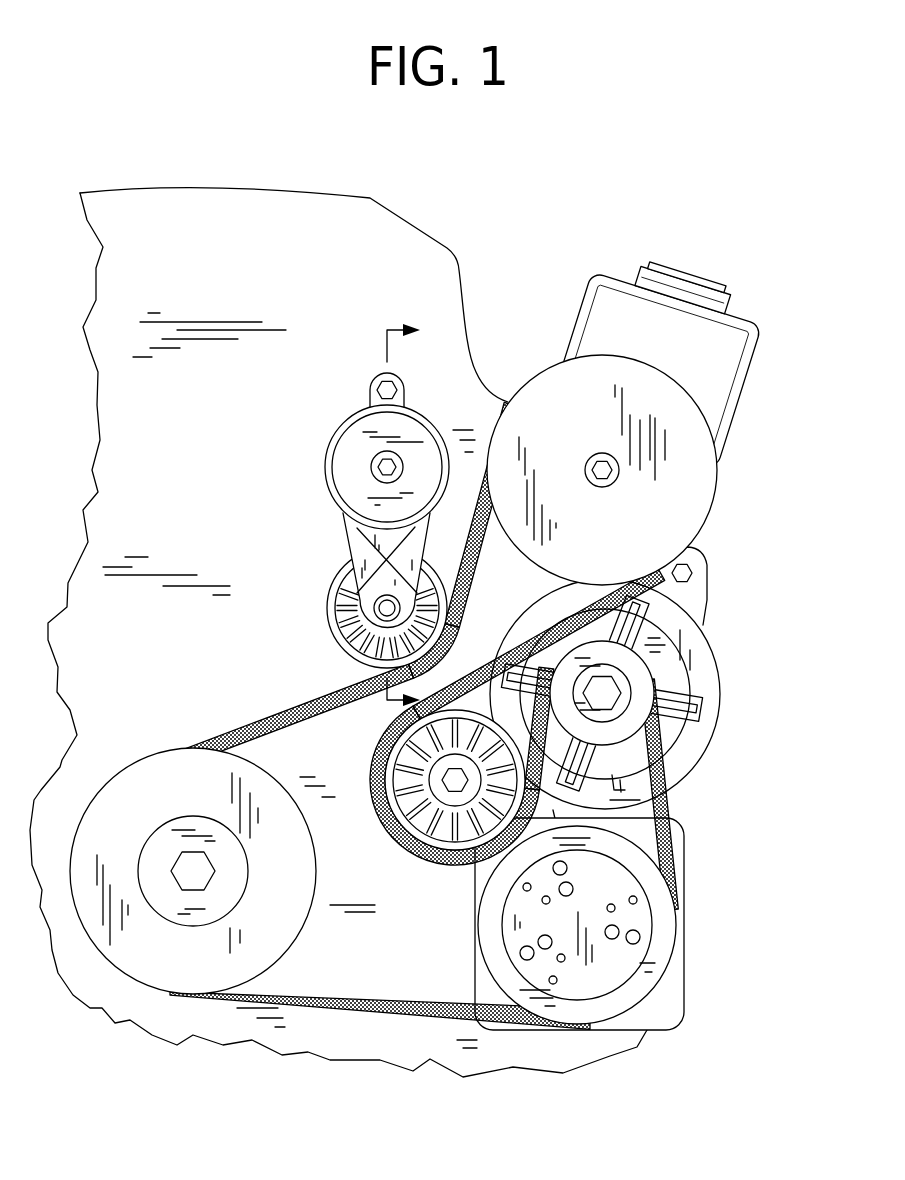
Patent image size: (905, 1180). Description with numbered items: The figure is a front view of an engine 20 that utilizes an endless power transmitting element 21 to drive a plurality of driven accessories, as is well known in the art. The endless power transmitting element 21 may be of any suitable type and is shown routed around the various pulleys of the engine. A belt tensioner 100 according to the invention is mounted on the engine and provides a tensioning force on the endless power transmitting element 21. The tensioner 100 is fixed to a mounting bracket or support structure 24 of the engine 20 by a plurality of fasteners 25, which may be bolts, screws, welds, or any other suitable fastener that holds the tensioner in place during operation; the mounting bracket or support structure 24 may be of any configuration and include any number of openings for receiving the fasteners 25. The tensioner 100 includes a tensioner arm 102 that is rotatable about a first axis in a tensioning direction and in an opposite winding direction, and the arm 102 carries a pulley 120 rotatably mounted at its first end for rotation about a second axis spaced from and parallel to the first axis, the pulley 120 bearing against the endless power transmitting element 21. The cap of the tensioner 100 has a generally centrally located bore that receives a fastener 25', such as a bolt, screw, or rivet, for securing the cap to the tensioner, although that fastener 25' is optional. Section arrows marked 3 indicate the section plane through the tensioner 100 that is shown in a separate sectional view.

The engine 20 is at (338, 622).
The mounting bracket or support structure 24 is at (453, 280).
The endless power transmitting element 21 is at (287, 705).
The tensioner 100 is at (380, 510).
The tensioner arm 102 is at (420, 542).
The pulley 120 is at (340, 605).
The fasteners 25 is at (361, 381).
The fastener 25' is at (420, 435).
The section line 3- 3 is at (393, 518).